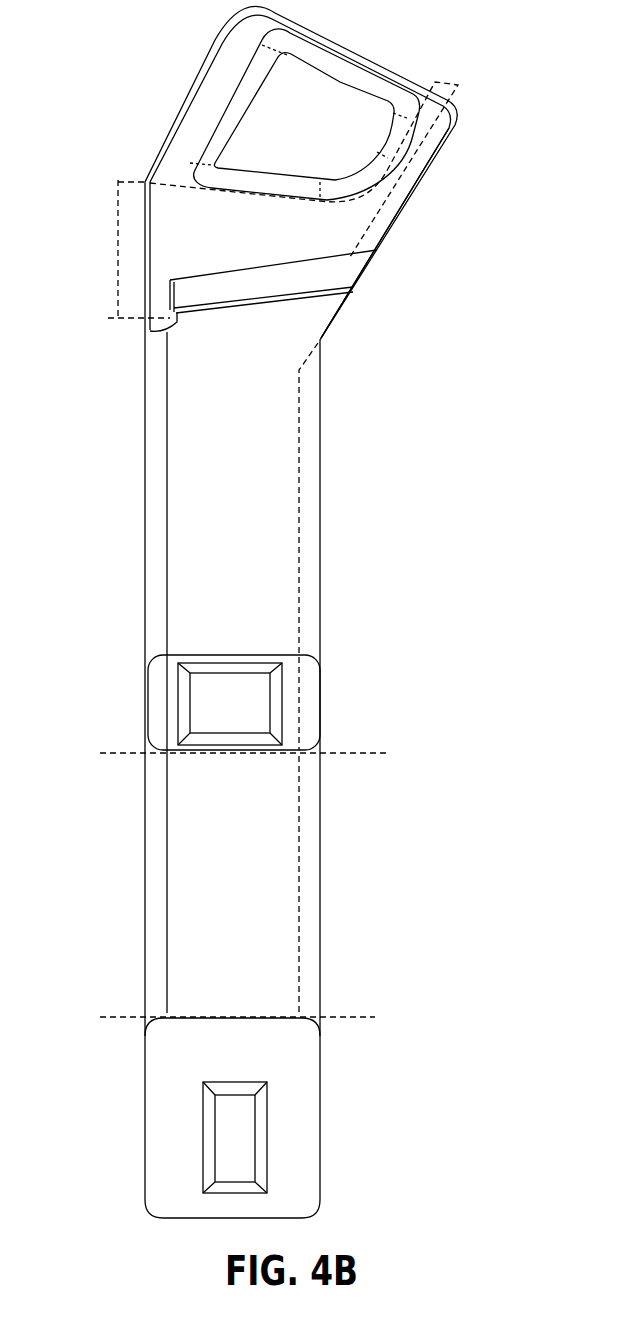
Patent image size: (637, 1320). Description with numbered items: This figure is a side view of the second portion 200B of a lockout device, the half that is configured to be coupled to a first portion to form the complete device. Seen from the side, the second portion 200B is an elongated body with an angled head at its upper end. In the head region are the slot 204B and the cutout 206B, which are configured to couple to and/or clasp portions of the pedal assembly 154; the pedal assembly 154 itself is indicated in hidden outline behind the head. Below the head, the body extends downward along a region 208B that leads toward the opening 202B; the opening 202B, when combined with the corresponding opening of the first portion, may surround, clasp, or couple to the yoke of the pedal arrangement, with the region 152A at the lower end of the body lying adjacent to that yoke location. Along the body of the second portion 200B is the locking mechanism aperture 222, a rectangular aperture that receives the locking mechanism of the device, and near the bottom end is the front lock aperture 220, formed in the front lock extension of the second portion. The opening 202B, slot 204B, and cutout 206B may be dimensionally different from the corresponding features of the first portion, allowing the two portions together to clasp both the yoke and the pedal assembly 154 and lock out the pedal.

The second portion 200B is at (323, 618).
The opening 202B is at (283, 885).
The slot 204B is at (167, 243).
The cutout 206B is at (413, 160).
The upper housing section 208B is at (283, 537).
The pedal assembly 154 is at (450, 95).
The locking mechanism aperture 222 is at (272, 675).
The front lock aperture 220 is at (255, 1097).
The base section 152A is at (375, 1017).